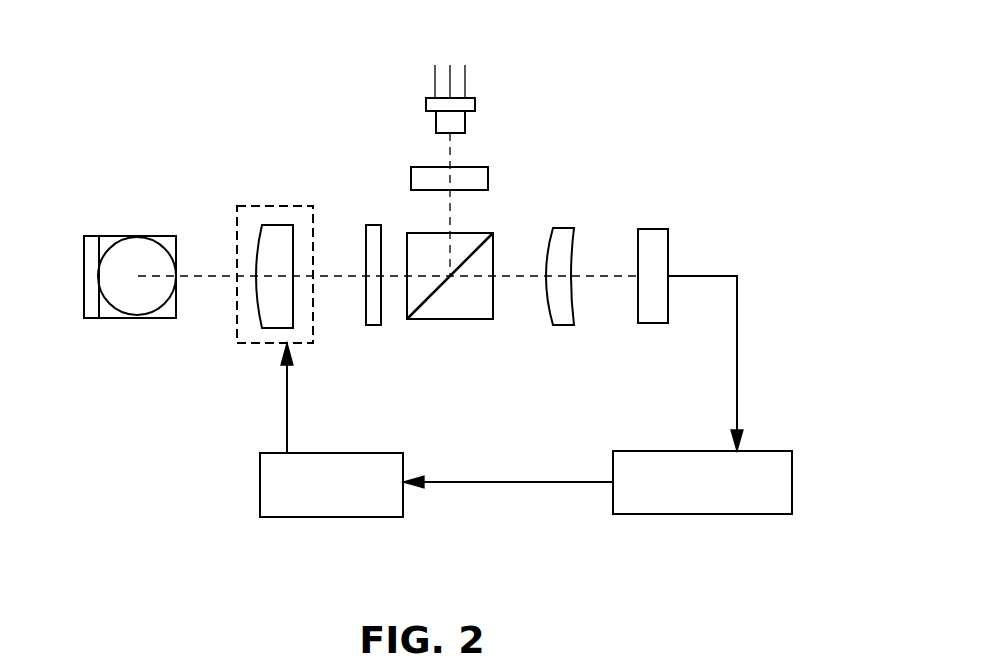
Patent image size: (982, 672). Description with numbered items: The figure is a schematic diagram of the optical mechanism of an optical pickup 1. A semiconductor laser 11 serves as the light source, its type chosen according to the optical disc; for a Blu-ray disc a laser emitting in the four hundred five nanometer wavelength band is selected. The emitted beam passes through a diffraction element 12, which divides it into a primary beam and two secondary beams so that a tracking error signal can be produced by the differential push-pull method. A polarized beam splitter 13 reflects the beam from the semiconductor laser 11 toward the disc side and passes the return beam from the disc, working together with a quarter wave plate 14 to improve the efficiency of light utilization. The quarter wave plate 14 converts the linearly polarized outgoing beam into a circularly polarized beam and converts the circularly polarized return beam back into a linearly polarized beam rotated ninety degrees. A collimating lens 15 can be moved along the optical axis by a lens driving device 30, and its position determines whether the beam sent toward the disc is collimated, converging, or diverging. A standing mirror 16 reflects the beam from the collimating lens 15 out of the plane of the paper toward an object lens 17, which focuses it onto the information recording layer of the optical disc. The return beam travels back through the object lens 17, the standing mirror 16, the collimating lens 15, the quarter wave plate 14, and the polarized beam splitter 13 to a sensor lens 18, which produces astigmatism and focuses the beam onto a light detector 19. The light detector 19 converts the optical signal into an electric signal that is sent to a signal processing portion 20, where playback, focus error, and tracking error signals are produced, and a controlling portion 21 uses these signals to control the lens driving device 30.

The optical pickup 1 is at (616, 80).
The semiconductor laser 11 is at (426, 102).
The diffraction element 12 is at (411, 178).
The polarized beam splitter 13 is at (448, 320).
The quarter wave plate 14 is at (372, 326).
The collimating lens 15 is at (264, 328).
The standing mirror 16 is at (92, 318).
The object lens 17 is at (133, 252).
The sensor lens 18 is at (565, 228).
The light detector 19 is at (655, 323).
The signal processing portion 20 is at (760, 451).
The controlling portion 21 is at (260, 485).
The lens driving device 30 is at (275, 270).